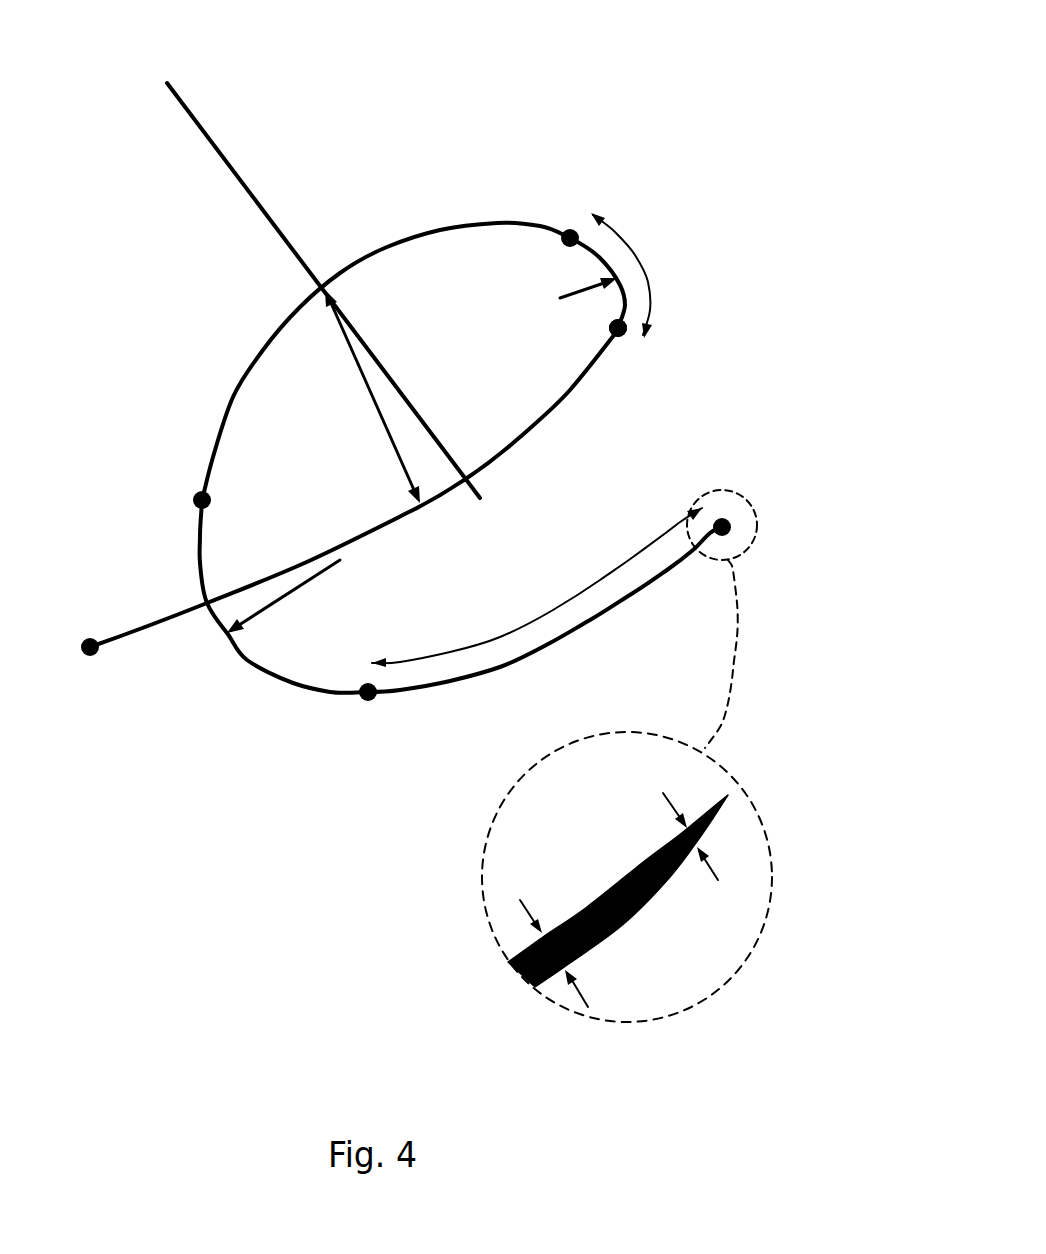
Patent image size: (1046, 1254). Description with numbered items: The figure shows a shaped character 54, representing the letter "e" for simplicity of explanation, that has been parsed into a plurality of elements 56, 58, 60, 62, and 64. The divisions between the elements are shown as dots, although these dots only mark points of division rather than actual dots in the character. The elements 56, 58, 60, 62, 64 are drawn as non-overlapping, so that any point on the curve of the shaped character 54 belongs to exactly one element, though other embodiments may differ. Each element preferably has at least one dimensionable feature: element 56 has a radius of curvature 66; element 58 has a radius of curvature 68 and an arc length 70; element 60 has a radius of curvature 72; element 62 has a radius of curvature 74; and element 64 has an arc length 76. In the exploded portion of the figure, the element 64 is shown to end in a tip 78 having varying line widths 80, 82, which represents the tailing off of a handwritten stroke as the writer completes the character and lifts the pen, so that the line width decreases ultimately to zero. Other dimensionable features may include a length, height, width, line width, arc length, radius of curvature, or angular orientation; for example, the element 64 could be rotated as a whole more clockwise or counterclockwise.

The shaped character 54 is at (612, 117).
The element 56 is at (157, 623).
The element 58 is at (623, 297).
The element 60 is at (427, 230).
The element 62 is at (285, 680).
The element 64 is at (592, 620).
The radius of curvature 66 is at (210, 150).
The radius of curvature 68 is at (582, 293).
The arc length 70 is at (633, 250).
The radius of curvature 72 is at (398, 383).
The radius of curvature 74 is at (303, 590).
The arc length 76 is at (553, 607).
The tip 78 is at (742, 796).
The line width 80 is at (520, 900).
The line width 82 is at (718, 880).